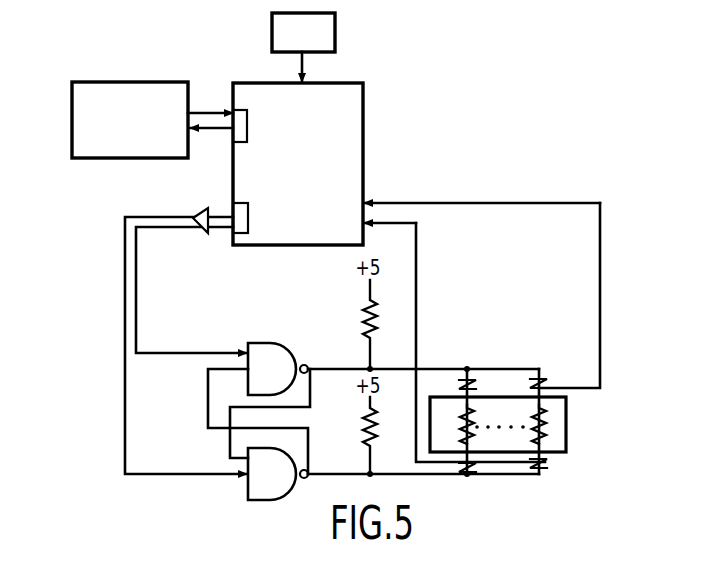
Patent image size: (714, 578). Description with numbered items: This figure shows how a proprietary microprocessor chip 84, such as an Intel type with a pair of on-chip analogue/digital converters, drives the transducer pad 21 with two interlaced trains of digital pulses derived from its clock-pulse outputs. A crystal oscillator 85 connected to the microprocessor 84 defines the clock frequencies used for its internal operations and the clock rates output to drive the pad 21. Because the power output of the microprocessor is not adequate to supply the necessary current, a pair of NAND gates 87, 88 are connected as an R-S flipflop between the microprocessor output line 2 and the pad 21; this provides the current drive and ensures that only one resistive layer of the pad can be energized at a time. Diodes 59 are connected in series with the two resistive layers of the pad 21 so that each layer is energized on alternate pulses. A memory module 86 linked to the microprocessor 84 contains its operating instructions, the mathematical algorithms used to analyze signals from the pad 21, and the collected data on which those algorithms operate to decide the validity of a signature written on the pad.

The output line with inverter 2 is at (186, 329).
The transducer pad 21 is at (566, 428).
The diodes 59 is at (487, 360).
The microprocessor 84 is at (294, 120).
The crystal oscillator 85 is at (335, 32).
The memory module 86 is at (121, 130).
The NAND gate 87 is at (259, 385).
The NAND gate 88 is at (259, 489).